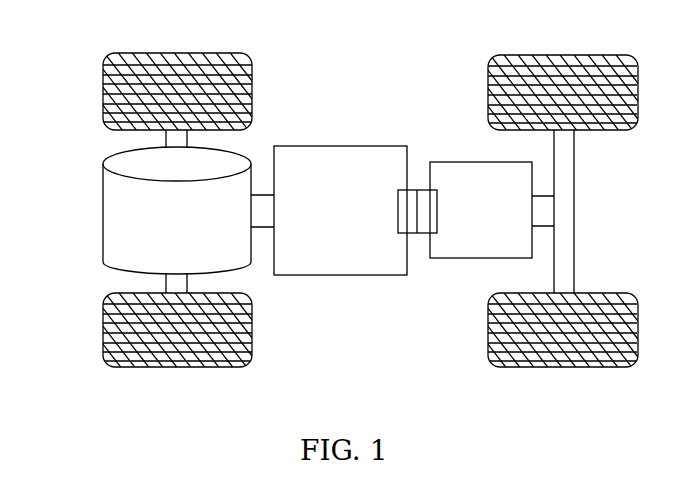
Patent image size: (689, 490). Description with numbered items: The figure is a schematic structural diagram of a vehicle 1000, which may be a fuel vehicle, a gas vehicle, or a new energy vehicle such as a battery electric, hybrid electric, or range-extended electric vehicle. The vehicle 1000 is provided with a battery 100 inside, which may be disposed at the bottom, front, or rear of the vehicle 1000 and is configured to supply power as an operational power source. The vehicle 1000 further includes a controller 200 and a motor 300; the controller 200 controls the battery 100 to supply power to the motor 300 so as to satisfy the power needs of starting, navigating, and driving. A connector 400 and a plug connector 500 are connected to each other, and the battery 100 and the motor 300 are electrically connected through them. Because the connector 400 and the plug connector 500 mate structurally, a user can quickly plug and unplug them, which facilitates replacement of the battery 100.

The vehicle 1000 is at (400, 37).
The battery 100 is at (467, 172).
The controller 200 is at (337, 246).
The motor 300 is at (118, 224).
The connector 400 is at (400, 236).
The plug connector 500 is at (425, 200).